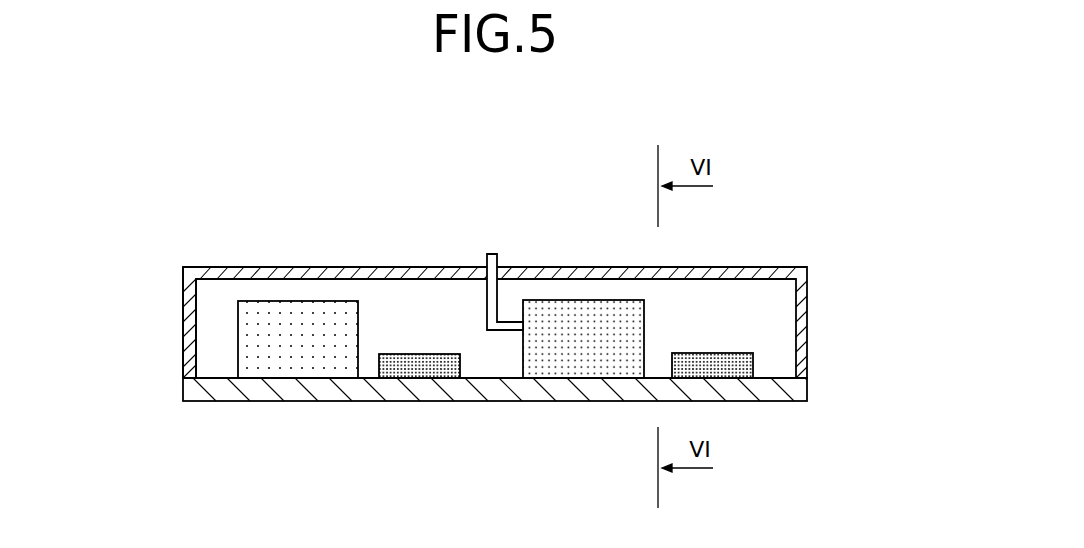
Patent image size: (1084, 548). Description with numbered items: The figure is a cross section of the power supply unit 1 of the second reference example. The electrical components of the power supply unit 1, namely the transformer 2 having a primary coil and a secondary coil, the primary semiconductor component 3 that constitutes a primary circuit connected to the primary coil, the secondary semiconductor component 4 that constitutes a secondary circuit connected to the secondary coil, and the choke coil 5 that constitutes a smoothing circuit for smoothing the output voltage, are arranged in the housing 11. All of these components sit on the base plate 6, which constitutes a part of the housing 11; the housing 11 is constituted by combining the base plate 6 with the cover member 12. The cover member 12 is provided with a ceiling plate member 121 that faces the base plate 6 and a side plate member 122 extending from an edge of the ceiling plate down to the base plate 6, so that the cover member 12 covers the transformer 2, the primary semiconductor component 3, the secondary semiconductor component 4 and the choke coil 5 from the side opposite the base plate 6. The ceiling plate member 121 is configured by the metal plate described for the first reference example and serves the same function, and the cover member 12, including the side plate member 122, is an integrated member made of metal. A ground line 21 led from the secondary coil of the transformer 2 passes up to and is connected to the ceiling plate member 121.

The power supply unit 1 is at (773, 170).
The transformer 2 is at (560, 327).
The primary semiconductor component 3 is at (733, 368).
The secondary semiconductor component 4 is at (406, 365).
The choke coil 5 is at (288, 355).
The base plate 6 is at (488, 388).
The housing 11 is at (800, 385).
The cover member 12 is at (793, 267).
The ground line 21 is at (487, 300).
The ceiling plate member 121 is at (387, 267).
The side plate member 122 is at (183, 310).